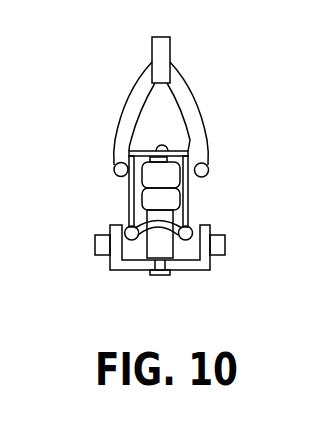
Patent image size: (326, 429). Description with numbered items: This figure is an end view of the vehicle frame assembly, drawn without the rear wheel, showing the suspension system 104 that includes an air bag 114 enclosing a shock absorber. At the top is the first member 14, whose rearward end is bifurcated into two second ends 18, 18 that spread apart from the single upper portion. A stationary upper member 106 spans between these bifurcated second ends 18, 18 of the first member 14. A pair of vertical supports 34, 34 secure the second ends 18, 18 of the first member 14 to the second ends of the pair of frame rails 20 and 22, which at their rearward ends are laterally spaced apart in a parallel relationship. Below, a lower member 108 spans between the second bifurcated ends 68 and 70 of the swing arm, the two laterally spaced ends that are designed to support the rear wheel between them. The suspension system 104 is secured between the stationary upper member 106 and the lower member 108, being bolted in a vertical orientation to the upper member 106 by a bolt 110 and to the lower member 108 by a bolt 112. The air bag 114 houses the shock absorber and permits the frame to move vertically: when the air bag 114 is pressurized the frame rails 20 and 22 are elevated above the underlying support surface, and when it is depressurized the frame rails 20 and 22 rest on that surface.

The first member 14 is at (172, 53).
The suspension system 104 is at (223, 90).
The upper member 106 is at (134, 137).
The bolt 110 is at (162, 145).
The second end 18 is at (115, 172).
The vertical support 34 is at (130, 196).
The air bag 114 is at (172, 200).
The frame rail 20 is at (127, 228).
The frame rail 22 is at (192, 224).
The second end of swing arm 68 is at (95, 247).
The second end of swing arm 70 is at (225, 250).
The lower member 108 is at (183, 270).
The bolt 112 is at (161, 277).